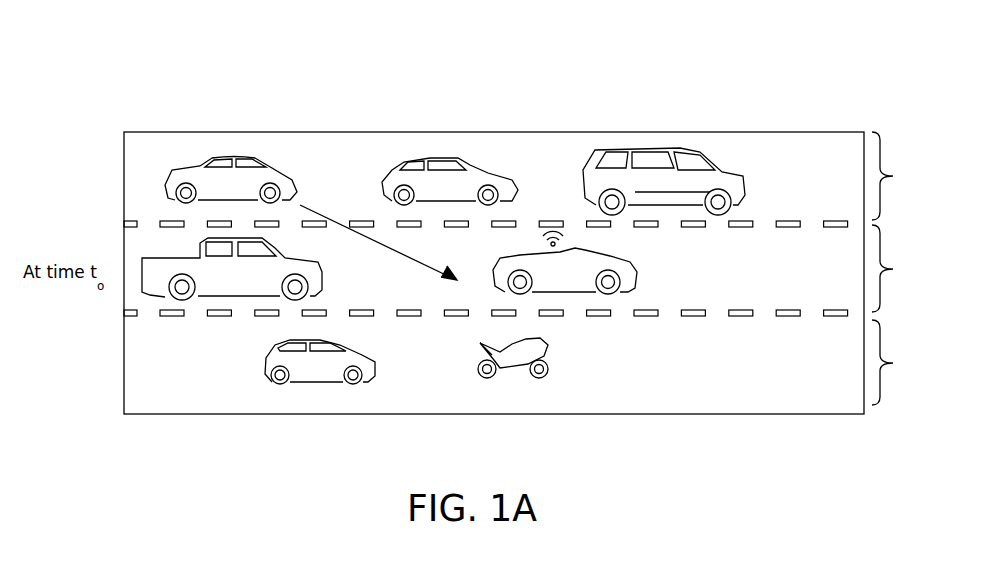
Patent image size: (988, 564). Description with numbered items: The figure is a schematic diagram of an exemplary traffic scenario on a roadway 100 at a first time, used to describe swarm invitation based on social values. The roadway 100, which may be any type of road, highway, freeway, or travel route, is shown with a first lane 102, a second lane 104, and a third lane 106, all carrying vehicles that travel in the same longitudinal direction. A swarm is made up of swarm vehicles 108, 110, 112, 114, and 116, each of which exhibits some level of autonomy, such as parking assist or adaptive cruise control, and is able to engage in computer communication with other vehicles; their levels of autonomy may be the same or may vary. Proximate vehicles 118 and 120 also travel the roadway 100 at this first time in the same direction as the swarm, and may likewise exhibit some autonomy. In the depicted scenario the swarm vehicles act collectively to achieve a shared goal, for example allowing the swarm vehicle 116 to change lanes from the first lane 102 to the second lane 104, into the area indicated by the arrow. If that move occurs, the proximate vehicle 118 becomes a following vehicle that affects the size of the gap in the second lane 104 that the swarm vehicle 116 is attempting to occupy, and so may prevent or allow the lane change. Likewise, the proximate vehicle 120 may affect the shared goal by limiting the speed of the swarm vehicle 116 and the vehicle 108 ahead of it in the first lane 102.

The roadway 100 is at (179, 47).
The first lane 102 is at (528, 179).
The second lane 104 is at (527, 270).
The third lane 106 is at (901, 362).
The swarm vehicle 108 is at (413, 156).
The swarm vehicle 110 is at (605, 258).
The swarm vehicle 112 is at (318, 382).
The swarm vehicle 114 is at (512, 378).
The swarm vehicle 116 is at (200, 156).
The proximate vehicle 118 is at (145, 282).
The proximate vehicle 120 is at (660, 150).